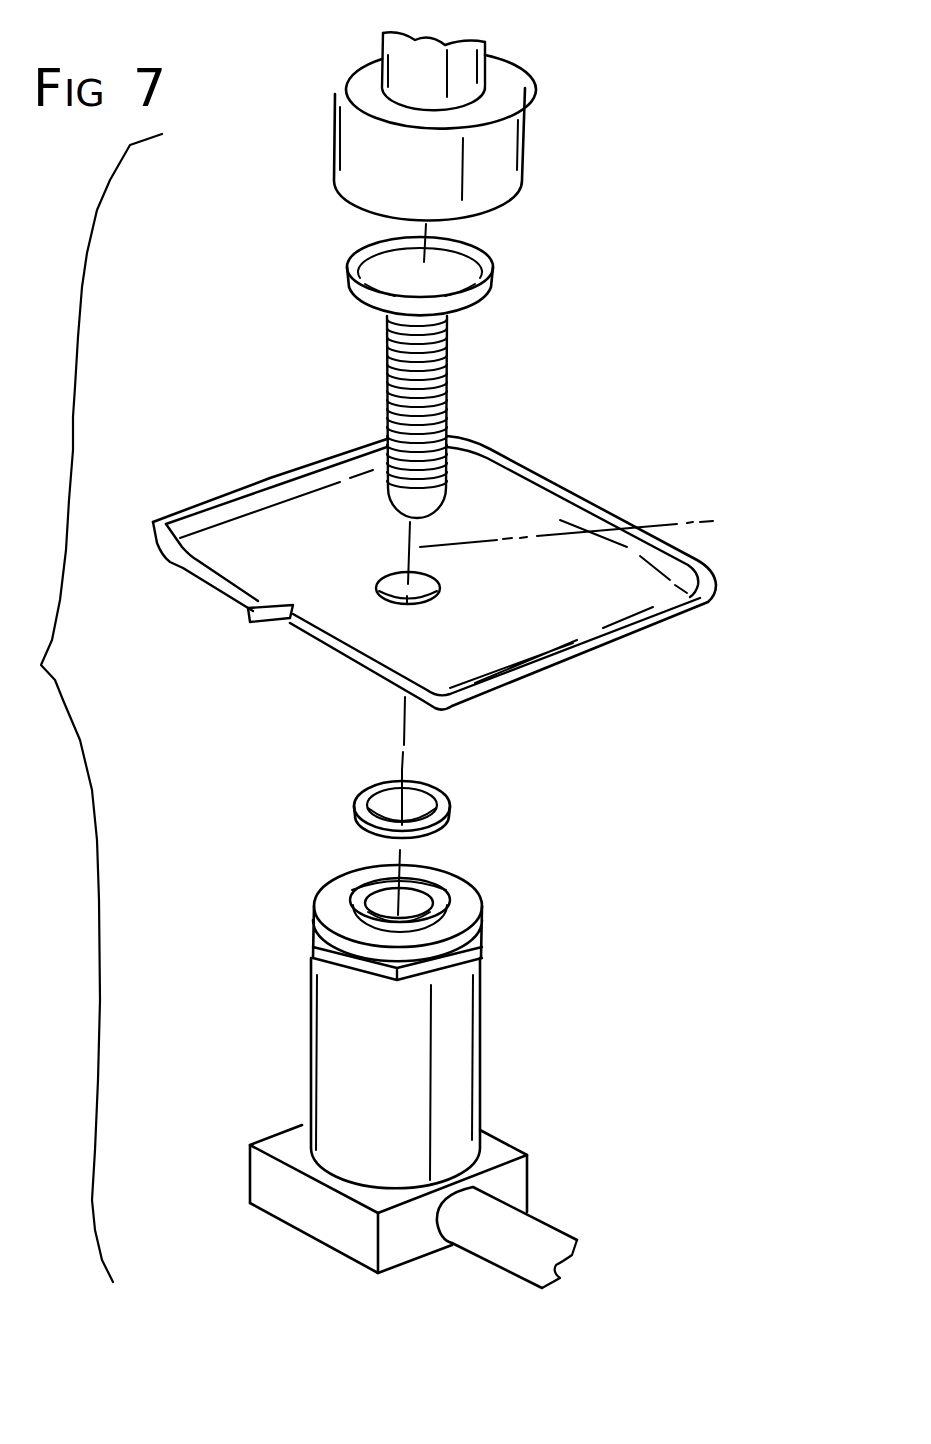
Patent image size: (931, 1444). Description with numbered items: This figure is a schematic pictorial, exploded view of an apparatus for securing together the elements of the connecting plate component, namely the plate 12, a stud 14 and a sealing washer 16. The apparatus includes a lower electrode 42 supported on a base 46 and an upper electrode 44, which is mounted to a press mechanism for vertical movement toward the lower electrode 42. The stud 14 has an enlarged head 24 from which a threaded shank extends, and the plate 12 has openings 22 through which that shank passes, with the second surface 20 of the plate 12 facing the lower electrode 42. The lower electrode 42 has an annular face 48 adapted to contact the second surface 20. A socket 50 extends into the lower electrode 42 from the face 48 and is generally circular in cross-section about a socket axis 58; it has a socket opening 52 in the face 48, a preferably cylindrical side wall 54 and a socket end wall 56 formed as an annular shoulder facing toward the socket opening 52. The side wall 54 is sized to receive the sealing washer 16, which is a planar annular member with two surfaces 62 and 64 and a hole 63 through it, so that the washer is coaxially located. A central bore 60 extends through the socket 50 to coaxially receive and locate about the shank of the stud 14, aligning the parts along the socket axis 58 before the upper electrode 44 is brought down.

The plate 12 is at (409, 573).
The stud 14 is at (353, 367).
The sealing washer 16 is at (366, 789).
The second surface 20 is at (347, 673).
The opening 22 is at (440, 583).
The enlarged head 24 is at (478, 267).
The lower electrode 42 is at (387, 1003).
The upper electrode 44 is at (291, 138).
The base 46 is at (287, 1208).
The annular face 48 is at (468, 893).
The socket 50 is at (375, 889).
The socket opening 52 is at (372, 890).
The side wall 54 is at (420, 882).
The socket end wall 56 is at (446, 909).
The socket axis 58 is at (390, 742).
The central bore 60 is at (418, 909).
The washer surface 62 is at (420, 782).
The hole 63 is at (437, 791).
The washer surface 64 is at (436, 832).